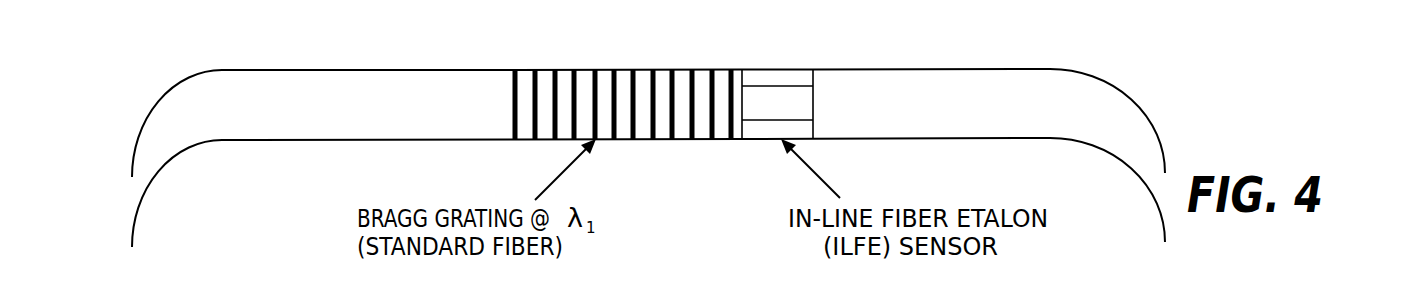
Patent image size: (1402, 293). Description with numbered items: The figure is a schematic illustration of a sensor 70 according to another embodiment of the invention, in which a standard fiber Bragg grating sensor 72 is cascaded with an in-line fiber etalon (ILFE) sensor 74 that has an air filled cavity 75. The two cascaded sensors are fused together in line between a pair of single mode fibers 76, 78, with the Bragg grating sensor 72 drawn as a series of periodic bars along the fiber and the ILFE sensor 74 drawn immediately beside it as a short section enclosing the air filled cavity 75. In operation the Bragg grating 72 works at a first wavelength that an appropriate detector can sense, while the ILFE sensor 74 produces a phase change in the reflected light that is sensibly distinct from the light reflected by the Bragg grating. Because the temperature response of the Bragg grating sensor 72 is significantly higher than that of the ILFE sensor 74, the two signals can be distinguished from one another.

The sensor 70 is at (659, 138).
The fiber Bragg grating sensor 72 is at (590, 38).
The ILFE sensor 74 is at (803, 84).
The air filled cavity 75 is at (793, 105).
The single mode fiber 76 is at (427, 69).
The single mode fiber 78 is at (958, 68).